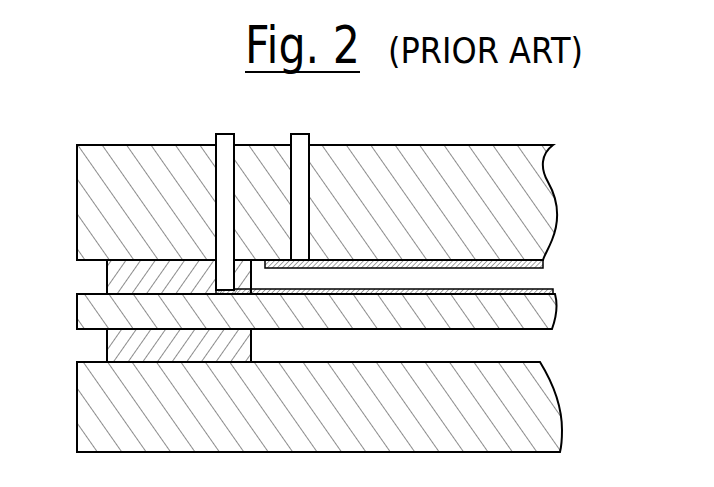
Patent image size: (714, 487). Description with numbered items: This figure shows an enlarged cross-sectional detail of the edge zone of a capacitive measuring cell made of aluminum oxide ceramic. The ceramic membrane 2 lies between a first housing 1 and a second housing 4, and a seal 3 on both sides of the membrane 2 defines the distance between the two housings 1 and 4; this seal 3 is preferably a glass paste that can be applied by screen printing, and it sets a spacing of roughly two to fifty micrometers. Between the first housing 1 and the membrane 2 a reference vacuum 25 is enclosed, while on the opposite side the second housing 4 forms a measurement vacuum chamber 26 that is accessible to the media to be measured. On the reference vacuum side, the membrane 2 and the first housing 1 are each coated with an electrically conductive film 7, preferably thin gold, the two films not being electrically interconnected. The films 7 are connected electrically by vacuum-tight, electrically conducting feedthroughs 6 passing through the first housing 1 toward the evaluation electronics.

The first housing 1 is at (522, 200).
The ceramic membrane 2 is at (342, 338).
The seal 3 is at (120, 277).
The second housing 4 is at (536, 412).
The feedthroughs 6 is at (262, 190).
The electrically conductive film 7 is at (411, 272).
The reference vacuum 25 is at (411, 286).
The measurement vacuum chamber 26 is at (414, 357).